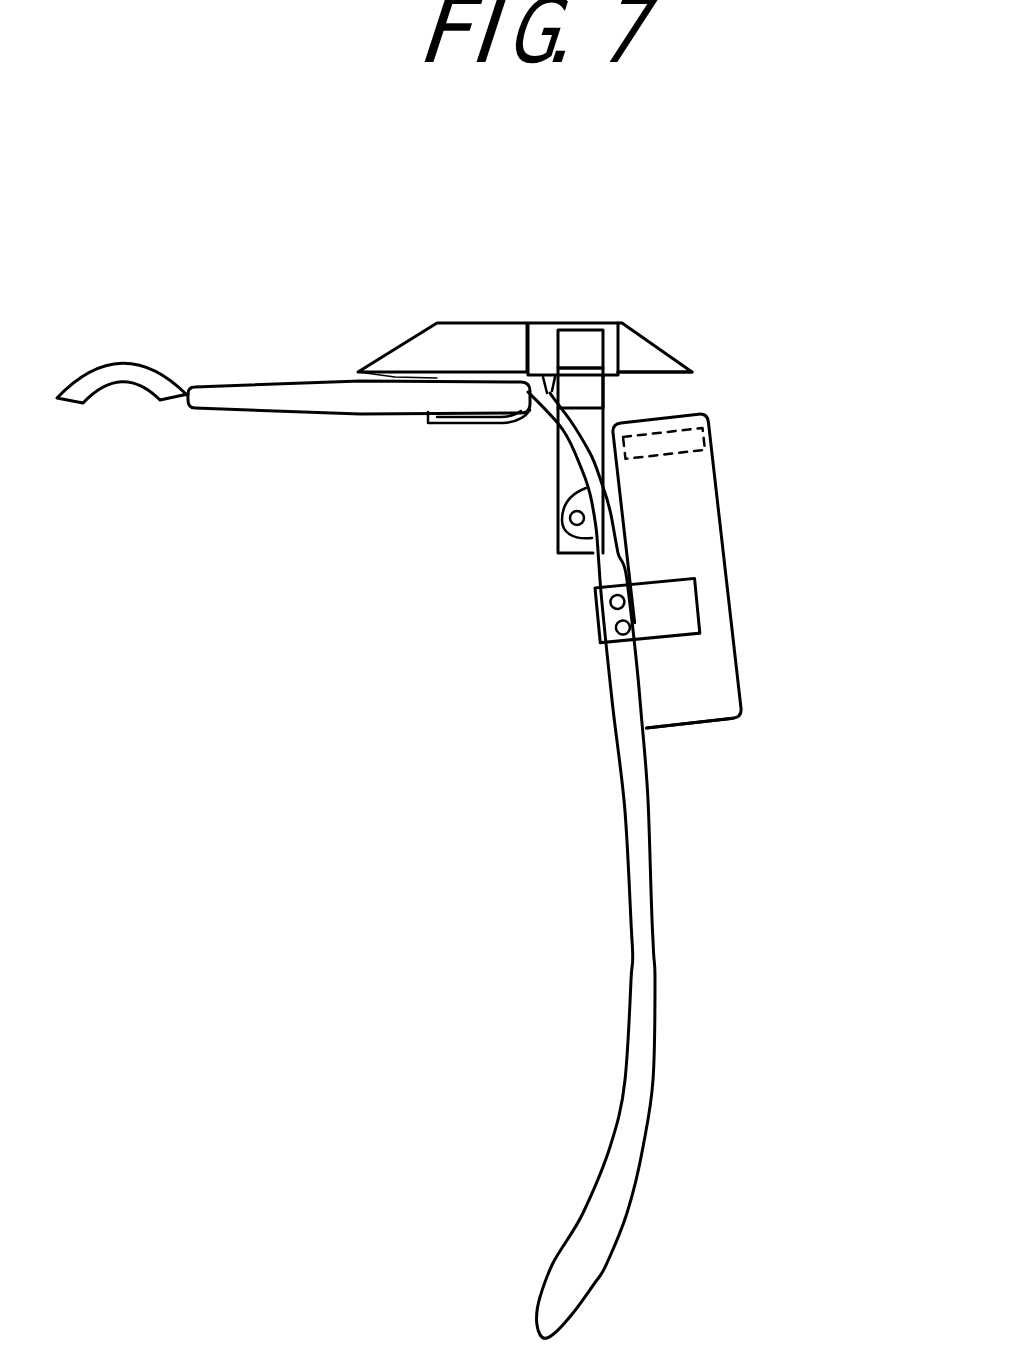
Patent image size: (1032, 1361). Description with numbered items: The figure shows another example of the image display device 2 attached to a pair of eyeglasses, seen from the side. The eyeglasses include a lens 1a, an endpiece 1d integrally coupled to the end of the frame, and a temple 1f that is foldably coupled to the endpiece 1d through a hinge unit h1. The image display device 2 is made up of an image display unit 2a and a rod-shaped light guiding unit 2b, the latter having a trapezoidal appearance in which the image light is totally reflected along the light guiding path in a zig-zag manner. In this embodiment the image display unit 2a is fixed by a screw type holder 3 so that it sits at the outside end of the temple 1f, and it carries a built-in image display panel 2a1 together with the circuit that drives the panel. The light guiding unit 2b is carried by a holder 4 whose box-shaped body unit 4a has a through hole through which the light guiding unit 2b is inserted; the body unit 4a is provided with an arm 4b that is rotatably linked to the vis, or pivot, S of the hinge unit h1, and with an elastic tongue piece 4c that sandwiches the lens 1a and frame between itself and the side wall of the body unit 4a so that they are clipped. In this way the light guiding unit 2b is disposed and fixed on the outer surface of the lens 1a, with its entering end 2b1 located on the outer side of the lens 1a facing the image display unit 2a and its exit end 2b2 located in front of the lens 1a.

The lens 1a is at (280, 392).
The endpiece 1d is at (567, 427).
The temple 1f is at (634, 944).
The image display device 2 is at (738, 630).
The image display unit 2a is at (705, 712).
The image display panel 2a1 is at (707, 445).
The light guiding unit 2b is at (440, 340).
The entering end 2b1 is at (655, 373).
The exit end 2b2 is at (395, 377).
The holder 3 is at (690, 598).
The holder 4 is at (571, 296).
The body unit 4a is at (540, 355).
The arm 4b is at (587, 338).
The elastic tongue piece 4c is at (458, 425).
The vis (pivot) S is at (568, 518).
The hinge unit h1 is at (573, 537).